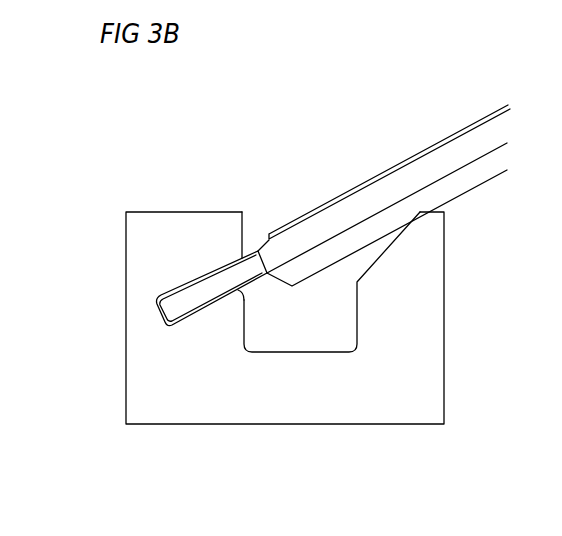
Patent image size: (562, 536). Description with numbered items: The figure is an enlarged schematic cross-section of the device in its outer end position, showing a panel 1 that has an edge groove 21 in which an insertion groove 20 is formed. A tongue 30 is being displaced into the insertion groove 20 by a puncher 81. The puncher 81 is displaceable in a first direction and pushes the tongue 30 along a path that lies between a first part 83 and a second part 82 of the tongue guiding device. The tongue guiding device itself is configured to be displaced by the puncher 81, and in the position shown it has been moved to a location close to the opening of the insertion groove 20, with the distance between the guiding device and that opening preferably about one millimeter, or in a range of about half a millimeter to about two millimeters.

The panel 1 is at (150, 222).
The insertion groove 20 is at (192, 317).
The edge groove 21 is at (323, 323).
The tongue 30 is at (226, 276).
The puncher 81 is at (292, 246).
The second part of the tongue guiding device 82 is at (463, 177).
The first part of the tongue guiding device 83 is at (377, 176).